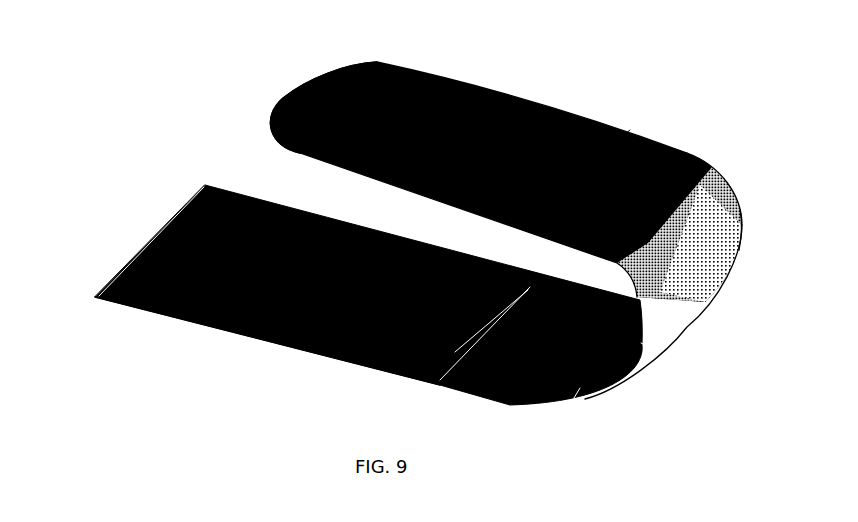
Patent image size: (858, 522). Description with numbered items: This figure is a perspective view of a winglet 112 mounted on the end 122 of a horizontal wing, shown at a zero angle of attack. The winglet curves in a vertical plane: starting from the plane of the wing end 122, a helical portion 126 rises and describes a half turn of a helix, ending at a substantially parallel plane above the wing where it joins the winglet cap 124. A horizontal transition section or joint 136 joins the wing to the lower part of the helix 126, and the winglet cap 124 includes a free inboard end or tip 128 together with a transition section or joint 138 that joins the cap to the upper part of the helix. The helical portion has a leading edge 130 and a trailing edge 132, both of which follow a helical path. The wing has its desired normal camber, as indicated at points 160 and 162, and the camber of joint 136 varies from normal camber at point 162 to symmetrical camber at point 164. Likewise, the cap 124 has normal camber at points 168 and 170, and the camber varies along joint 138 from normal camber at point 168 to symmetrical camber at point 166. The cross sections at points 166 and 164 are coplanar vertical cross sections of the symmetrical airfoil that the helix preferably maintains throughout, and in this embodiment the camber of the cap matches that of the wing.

The winglet 112 is at (436, 245).
The wing end 122 is at (313, 352).
The winglet cap 124 is at (532, 106).
The helical portion 126 is at (735, 245).
The free inboard end 128 is at (292, 108).
The leading edge 130 is at (645, 345).
The trailing edge 132 is at (742, 227).
The transition section 136 is at (483, 393).
The transition section 138 is at (687, 152).
The point 160 is at (117, 253).
The point 162 is at (447, 352).
The point 164 is at (577, 391).
The point 166 is at (700, 173).
The point 168 is at (604, 150).
The point 170 is at (353, 105).